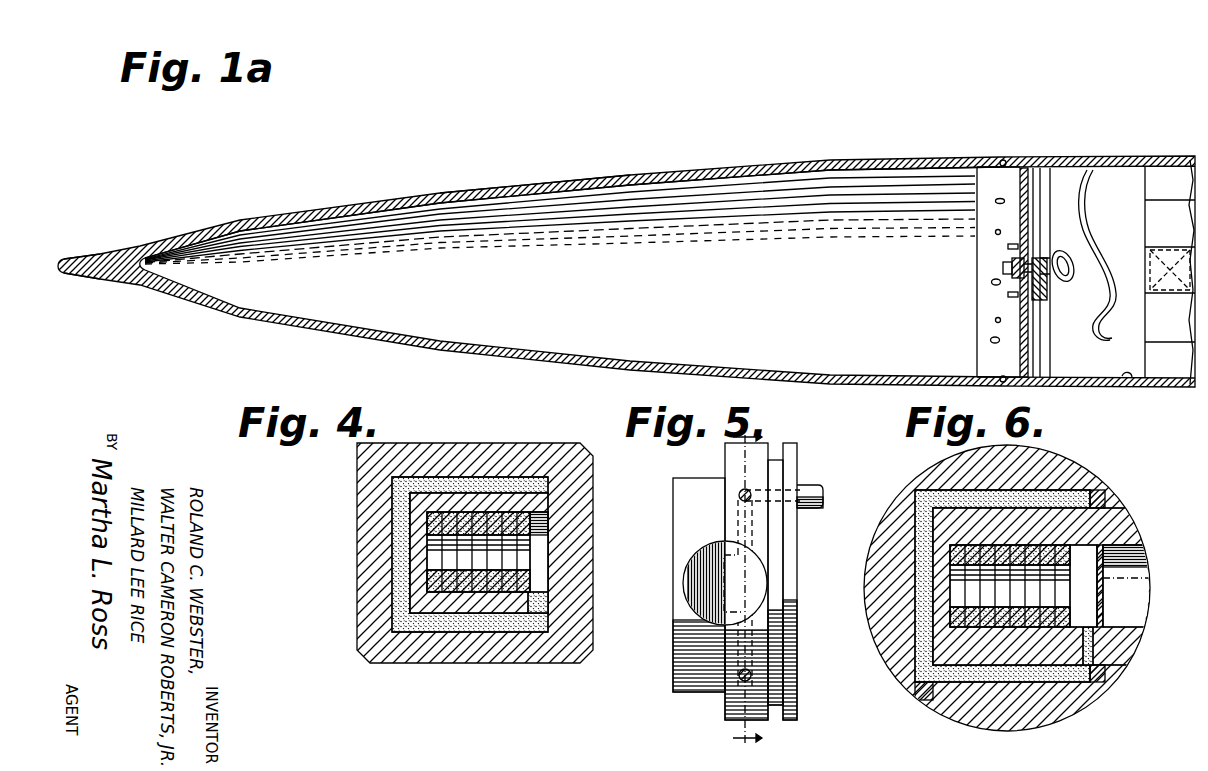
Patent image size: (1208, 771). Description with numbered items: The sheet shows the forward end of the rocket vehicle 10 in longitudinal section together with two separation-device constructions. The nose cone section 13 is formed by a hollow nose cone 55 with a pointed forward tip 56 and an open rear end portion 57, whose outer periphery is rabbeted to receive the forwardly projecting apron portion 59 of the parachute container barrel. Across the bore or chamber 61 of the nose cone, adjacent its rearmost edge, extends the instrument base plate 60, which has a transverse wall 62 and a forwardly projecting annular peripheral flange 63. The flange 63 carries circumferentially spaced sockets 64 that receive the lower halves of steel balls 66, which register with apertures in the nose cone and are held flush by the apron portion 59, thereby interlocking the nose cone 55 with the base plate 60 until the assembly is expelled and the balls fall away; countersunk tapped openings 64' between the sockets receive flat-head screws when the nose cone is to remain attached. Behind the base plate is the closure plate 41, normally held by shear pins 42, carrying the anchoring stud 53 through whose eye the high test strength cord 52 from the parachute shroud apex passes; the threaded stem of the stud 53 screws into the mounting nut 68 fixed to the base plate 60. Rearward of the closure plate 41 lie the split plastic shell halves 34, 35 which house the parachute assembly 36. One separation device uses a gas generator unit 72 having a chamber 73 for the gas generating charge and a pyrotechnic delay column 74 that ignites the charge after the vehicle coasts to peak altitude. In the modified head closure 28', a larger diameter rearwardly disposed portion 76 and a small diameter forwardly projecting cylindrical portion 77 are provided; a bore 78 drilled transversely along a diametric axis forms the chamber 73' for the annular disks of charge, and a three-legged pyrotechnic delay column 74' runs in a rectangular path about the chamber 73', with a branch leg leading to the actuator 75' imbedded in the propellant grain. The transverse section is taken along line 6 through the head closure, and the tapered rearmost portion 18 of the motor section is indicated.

In FIG. 1a, the rocket vehicle 10 is at (1085, 156).
In FIG. 1a, the nose cone section 13 is at (690, 170).
In FIG. 1a, the hollow nose cone 55 is at (505, 188).
In FIG. 1a, the pointed forward tip 56 is at (108, 256).
In FIG. 1a, the open rear end portion 57 is at (957, 172).
In FIG. 1a, the bore or chamber 61 is at (832, 276).
In FIG. 1a, the apron portion 59 is at (960, 160).
In FIG. 1a, the steel balls 66 is at (1003, 160).
In FIG. 1a, the shear pins 42 is at (1032, 160).
In FIG. 1a, the transverse wall 62 is at (1032, 334).
In FIG. 1a, the closure plate 41 is at (1052, 170).
In FIG. 1a, the shell half 34 is at (1130, 160).
In FIG. 1a, the parachute assembly 36 is at (1168, 187).
In FIG. 1a, the shell half 35 is at (1130, 380).
In FIG. 1a, the instrument base plate 60 is at (1032, 292).
In FIG. 1a, the mounting nut 68 is at (1003, 268).
In FIG. 1a, the sockets 64 is at (967, 276).
In FIG. 1a, the countersunk tapped openings 64' is at (970, 270).
In FIG. 1a, the annular peripheral flange 63 is at (990, 371).
In FIG. 1a, the high test strength cord 52 is at (1105, 235).
In FIG. 1a, the anchoring stud 53 is at (1060, 254).
In FIG. 4, the gas generator unit 72 is at (357, 490).
In FIG. 4, the pyrotechnic delay column 74 is at (470, 523).
In FIG. 4, the chamber 73 is at (524, 552).
In FIG. 5, the forwardly projecting cylindrical portion 77 is at (690, 505).
In FIG. 5, the rearwardly disposed portion 76 is at (790, 536).
In FIG. 5, the actuator 75' is at (820, 477).
In FIG. 5, the three-legged pyrotechnic delay column 74' is at (752, 569).
In FIG. 6, the three-legged pyrotechnic delay column 74' is at (1034, 573).
In FIG. 5, the tapered rearmost portion 18 is at (765, 593).
In FIG. 5, the section line 6- 6 is at (759, 585).
In FIG. 6, the head closure 28' is at (1007, 588).
In FIG. 6, the chamber 73' is at (1045, 586).
In FIG. 6, the bore 78 is at (1130, 570).